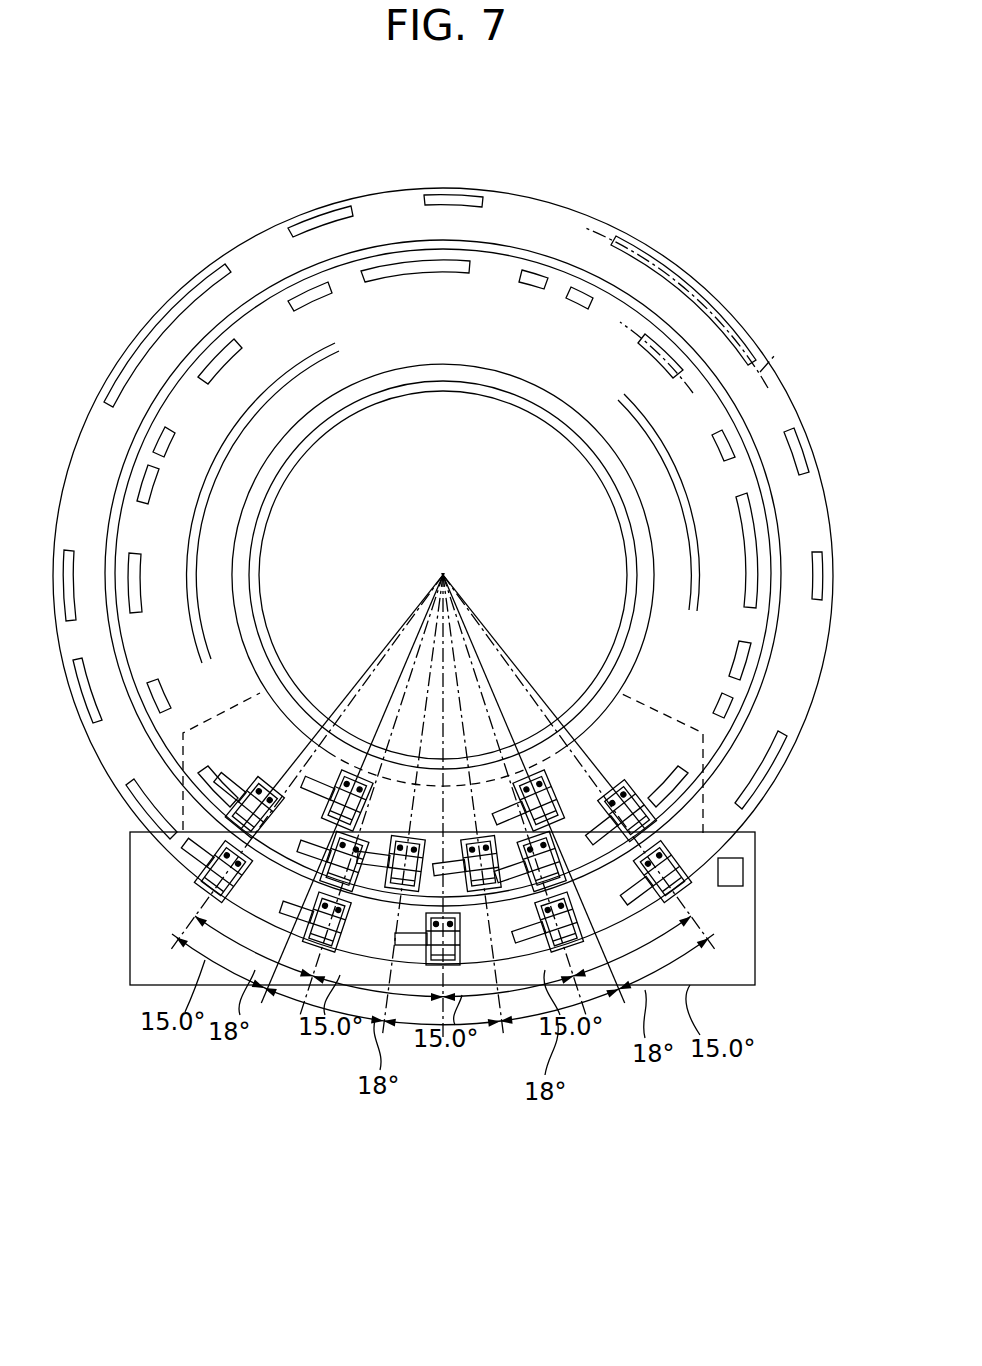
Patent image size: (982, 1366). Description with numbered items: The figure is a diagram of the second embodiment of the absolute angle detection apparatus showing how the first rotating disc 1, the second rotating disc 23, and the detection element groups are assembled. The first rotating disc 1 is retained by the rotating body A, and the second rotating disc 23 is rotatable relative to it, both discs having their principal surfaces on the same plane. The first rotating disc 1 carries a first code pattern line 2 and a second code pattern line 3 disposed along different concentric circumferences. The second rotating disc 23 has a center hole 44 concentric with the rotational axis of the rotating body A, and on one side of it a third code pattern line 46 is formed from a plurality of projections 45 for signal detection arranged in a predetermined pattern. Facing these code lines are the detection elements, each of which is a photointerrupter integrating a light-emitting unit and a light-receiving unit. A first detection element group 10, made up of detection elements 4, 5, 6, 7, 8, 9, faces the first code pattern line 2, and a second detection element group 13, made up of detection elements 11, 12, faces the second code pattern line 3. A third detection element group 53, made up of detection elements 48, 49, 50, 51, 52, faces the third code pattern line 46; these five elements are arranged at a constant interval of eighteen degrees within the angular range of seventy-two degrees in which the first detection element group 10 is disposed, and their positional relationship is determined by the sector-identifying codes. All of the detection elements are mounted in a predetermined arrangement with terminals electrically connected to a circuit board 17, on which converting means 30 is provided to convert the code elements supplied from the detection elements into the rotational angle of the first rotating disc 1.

The first rotating disc 1 is at (477, 300).
The first code pattern line 2 is at (745, 485).
The second code pattern line 3 is at (622, 397).
The detection element 4 is at (625, 800).
The detection element 5 is at (545, 780).
The detection element 6 is at (478, 840).
The detection element 7 is at (290, 680).
The detection element 8 is at (335, 775).
The detection element 9 is at (255, 790).
The first detection element group 10 is at (570, 490).
The detection element 11 is at (300, 780).
The detection element 12 is at (400, 840).
The second detection element group 13 is at (395, 605).
The circuit board 17 is at (757, 978).
The second rotating disc 23 is at (385, 212).
The converting means 30 is at (745, 868).
The center hole 44 is at (612, 300).
The projections 45 is at (170, 317).
The third code pattern line 46 is at (770, 360).
The detection element 48 is at (615, 852).
The detection element 49 is at (523, 852).
The detection element 50 is at (413, 852).
The detection element 51 is at (326, 852).
The detection element 52 is at (296, 852).
The third detection element group 53 is at (430, 880).
The rotating body A is at (393, 430).